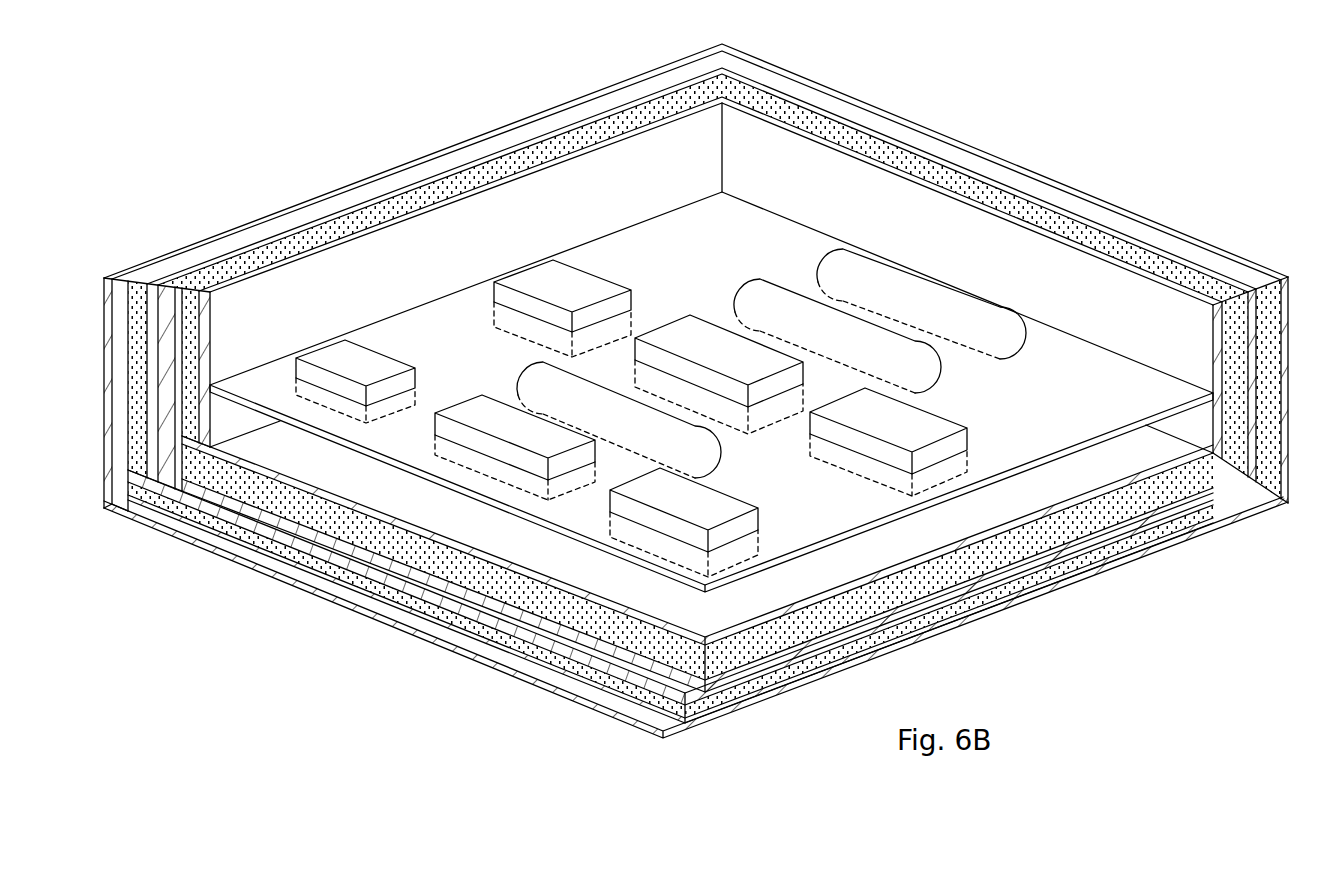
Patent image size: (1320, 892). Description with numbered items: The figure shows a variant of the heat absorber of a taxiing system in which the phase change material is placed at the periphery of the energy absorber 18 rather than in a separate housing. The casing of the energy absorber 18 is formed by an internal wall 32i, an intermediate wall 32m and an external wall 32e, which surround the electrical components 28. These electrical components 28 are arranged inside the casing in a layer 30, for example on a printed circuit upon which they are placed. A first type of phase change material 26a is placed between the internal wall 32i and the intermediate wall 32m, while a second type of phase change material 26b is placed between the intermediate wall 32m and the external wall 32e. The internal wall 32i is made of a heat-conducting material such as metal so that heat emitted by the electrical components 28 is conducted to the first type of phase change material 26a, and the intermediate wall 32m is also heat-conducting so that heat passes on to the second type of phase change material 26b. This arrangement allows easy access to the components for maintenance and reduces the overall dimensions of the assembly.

The energy absorber 18 is at (978, 108).
The layer 30 is at (683, 258).
The electrical components 28 is at (538, 278).
The internal wall 32i is at (1050, 240).
The intermediate wall 32m is at (1135, 250).
The external wall 32e is at (1242, 262).
The first type of phase change material 26a is at (1078, 522).
The second type of phase change material 26b is at (1198, 494).